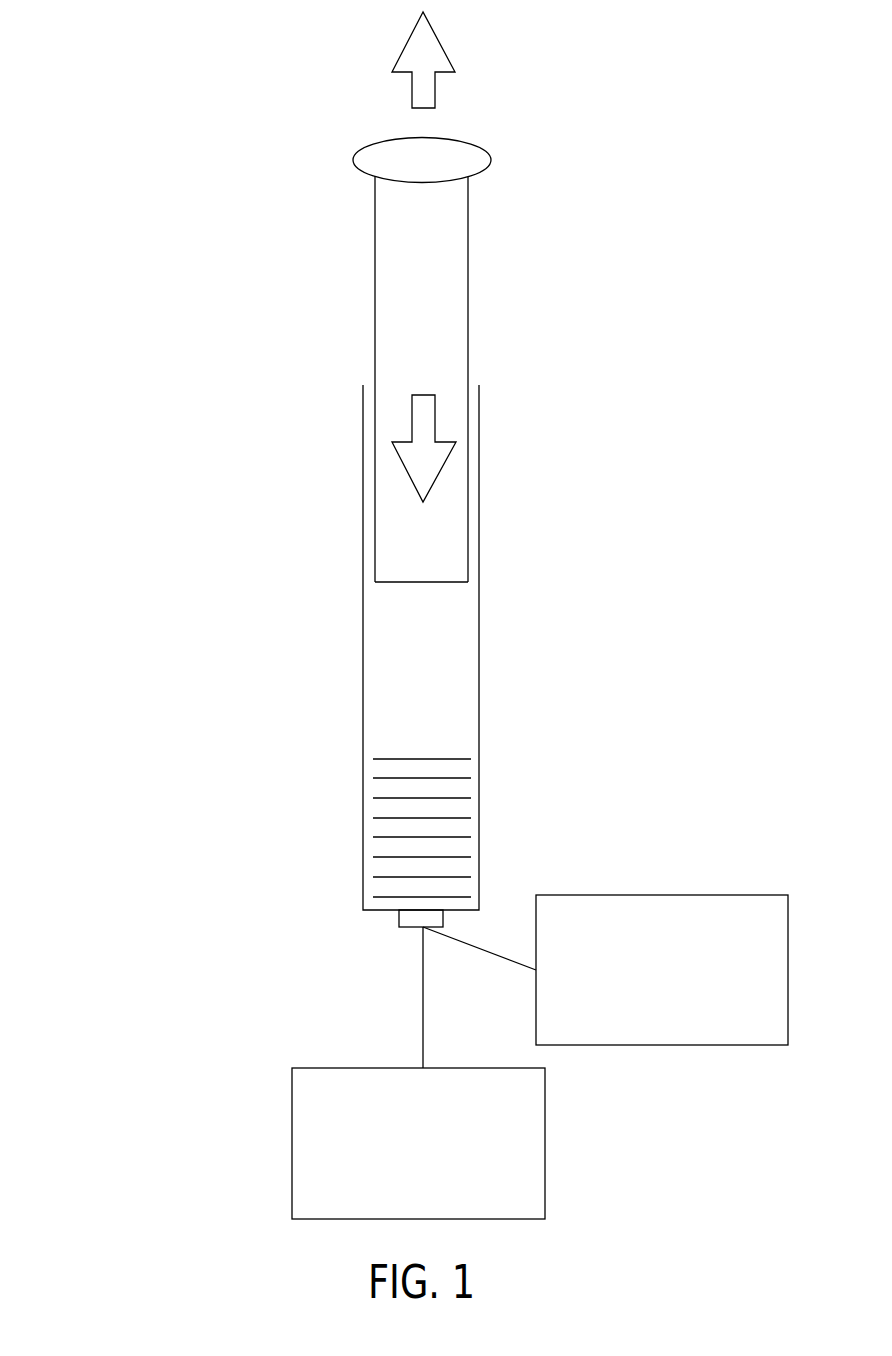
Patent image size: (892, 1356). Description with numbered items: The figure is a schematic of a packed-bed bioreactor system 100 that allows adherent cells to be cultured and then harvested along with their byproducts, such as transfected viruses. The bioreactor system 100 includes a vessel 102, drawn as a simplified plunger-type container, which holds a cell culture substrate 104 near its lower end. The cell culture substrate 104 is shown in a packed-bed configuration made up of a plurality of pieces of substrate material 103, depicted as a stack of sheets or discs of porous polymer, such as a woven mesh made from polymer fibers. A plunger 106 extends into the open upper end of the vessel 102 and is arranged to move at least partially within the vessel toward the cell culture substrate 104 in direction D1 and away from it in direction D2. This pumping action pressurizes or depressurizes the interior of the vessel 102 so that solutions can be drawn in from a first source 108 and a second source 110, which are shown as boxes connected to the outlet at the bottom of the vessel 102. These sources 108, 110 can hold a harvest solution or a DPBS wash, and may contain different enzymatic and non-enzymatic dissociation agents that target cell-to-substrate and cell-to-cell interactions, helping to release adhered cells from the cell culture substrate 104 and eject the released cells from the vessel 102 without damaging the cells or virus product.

The packed-bed bioreactor system 100 is at (142, 112).
The vessel 102 is at (363, 706).
The piece of substrate material 103 is at (385, 877).
The cell culture substrate 104 is at (488, 760).
The plunger 106 is at (468, 316).
The source 108 is at (442, 1160).
The source 110 is at (688, 986).
The direction D1 is at (423, 393).
The direction D2 is at (443, 47).